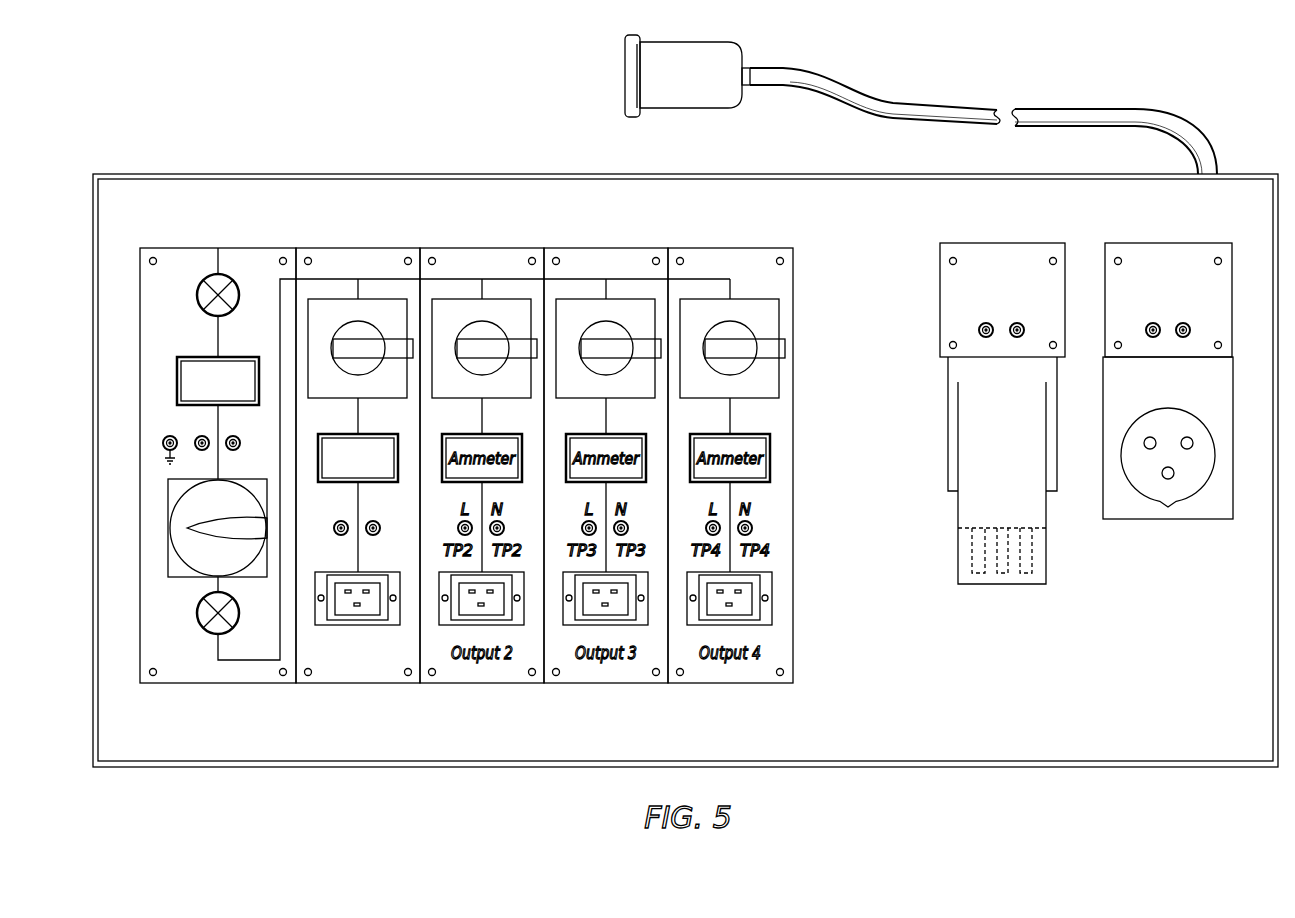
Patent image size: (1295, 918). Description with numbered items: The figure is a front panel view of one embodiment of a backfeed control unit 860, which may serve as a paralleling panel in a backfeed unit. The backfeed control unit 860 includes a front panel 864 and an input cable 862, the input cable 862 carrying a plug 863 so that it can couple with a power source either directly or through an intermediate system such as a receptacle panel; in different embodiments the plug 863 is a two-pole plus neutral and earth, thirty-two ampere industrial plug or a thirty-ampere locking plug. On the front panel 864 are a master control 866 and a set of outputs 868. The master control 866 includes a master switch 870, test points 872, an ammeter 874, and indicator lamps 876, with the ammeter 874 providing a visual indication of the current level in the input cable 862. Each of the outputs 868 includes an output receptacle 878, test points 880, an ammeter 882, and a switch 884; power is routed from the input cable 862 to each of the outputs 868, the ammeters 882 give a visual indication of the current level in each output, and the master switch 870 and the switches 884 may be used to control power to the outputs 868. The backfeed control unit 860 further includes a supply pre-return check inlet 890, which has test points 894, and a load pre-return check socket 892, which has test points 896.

The backfeed control unit 860 is at (154, 136).
The input cable 862 is at (793, 82).
The plug 863 is at (683, 108).
The front panel 864 is at (670, 208).
The master control 866 is at (223, 683).
The outputs 868 is at (357, 499).
The master switch 870 is at (177, 550).
The test points 872 is at (196, 440).
The ammeter 874 is at (242, 357).
The indicator lamps 876 is at (215, 273).
The output receptacle 878 is at (373, 610).
The test points 880 is at (380, 523).
The ammeter 882 is at (383, 437).
The switch 884 is at (353, 337).
The supply pre-return check inlet 890 is at (975, 413).
The load pre-return check socket 892 is at (1187, 405).
The test points 894 is at (978, 331).
The test points 896 is at (1191, 330).